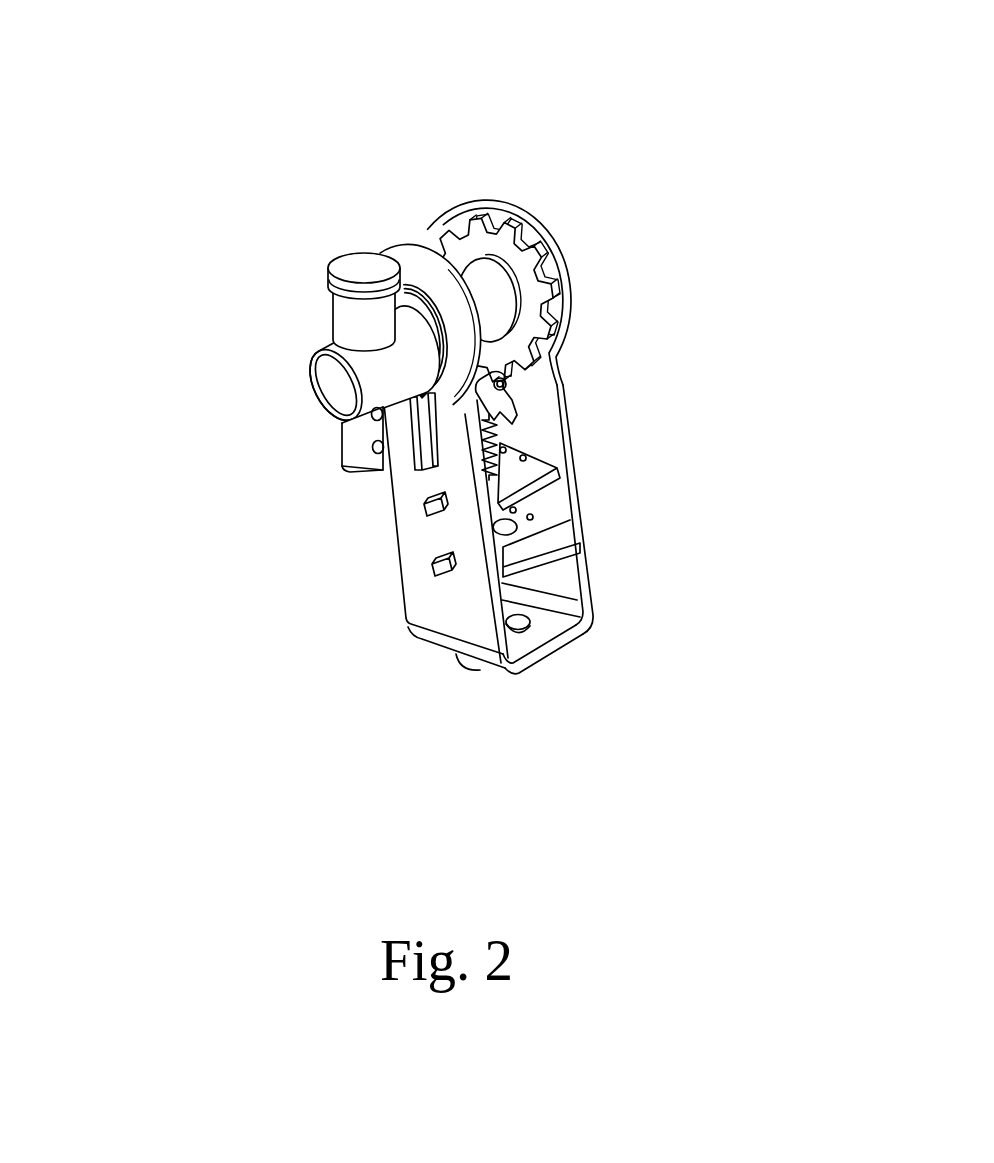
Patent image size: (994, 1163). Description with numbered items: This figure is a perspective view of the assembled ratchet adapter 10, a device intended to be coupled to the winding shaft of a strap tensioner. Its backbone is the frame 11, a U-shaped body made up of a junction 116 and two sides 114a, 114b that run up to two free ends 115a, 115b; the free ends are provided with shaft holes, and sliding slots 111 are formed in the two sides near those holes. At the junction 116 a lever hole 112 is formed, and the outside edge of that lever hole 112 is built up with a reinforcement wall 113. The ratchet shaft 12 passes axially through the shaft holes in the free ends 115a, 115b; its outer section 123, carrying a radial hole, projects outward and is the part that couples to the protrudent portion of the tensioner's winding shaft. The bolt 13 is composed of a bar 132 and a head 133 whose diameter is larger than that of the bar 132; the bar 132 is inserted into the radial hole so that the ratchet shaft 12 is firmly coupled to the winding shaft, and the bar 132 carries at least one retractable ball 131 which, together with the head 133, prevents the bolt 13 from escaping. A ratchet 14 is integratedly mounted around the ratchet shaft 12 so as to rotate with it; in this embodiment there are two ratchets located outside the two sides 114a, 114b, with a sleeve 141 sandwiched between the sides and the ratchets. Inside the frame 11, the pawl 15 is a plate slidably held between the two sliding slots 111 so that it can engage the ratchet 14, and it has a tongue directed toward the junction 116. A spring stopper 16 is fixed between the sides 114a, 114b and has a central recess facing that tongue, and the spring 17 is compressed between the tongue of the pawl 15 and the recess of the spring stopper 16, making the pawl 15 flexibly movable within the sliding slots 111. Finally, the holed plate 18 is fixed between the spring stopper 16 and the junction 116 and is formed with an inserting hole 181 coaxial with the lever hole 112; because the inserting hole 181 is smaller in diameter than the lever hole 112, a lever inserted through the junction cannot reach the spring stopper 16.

The ratchet adapter 10 is at (661, 228).
The frame 11 is at (486, 408).
The sliding slots 111 is at (432, 462).
The lever hole 112 is at (519, 627).
The reinforcement wall 113 is at (465, 660).
The side 114a is at (415, 543).
The side 114b is at (588, 587).
The free end 115a is at (418, 251).
The free end 115b is at (508, 217).
The junction 116 is at (543, 658).
The ratchet shaft 12 is at (250, 351).
The outer section 123 is at (356, 360).
The bolt 13 is at (255, 292).
The retractable ball 131 is at (347, 460).
The bar 132 is at (350, 430).
The head 133 is at (343, 322).
The ratchet 14 is at (547, 206).
The sleeve 141 is at (483, 280).
The pawl 15 is at (507, 403).
The spring stopper 16 is at (537, 490).
The spring 17 is at (503, 444).
The holed plate 18 is at (609, 571).
The inserting hole 181 is at (540, 514).